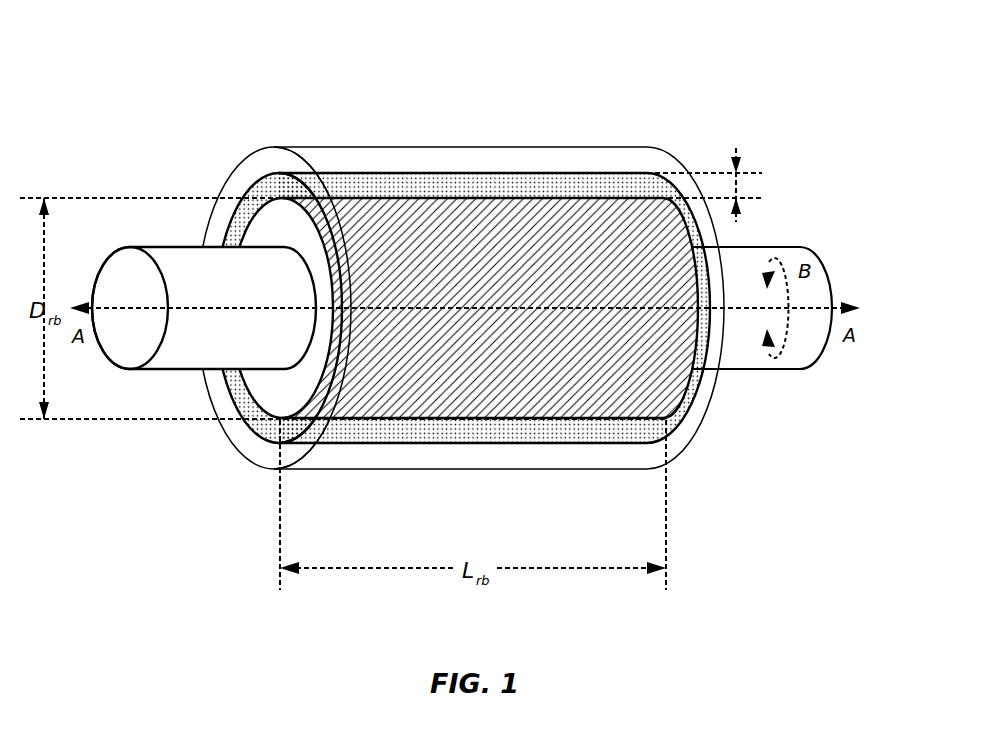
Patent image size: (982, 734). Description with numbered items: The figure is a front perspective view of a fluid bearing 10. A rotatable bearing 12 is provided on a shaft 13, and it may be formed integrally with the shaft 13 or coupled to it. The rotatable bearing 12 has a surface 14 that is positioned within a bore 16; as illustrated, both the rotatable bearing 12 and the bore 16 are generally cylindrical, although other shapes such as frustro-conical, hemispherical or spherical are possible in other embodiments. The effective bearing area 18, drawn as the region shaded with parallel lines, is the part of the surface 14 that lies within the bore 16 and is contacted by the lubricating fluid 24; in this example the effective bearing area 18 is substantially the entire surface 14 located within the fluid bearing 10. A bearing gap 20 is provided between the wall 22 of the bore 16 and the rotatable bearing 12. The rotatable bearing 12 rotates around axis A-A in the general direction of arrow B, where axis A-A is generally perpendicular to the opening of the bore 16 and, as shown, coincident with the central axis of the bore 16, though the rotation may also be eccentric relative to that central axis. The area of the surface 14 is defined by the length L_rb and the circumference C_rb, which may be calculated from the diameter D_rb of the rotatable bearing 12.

The fluid bearing 10 is at (457, 273).
The rotatable bearing 12 is at (418, 195).
The shaft 13 is at (185, 371).
The surface 14 is at (487, 393).
The bore 16 is at (272, 184).
The effective bearing area 18 is at (590, 392).
The bearing gap 20 is at (708, 169).
The wall 22 is at (563, 173).
The lubricating fluid 24 is at (360, 432).